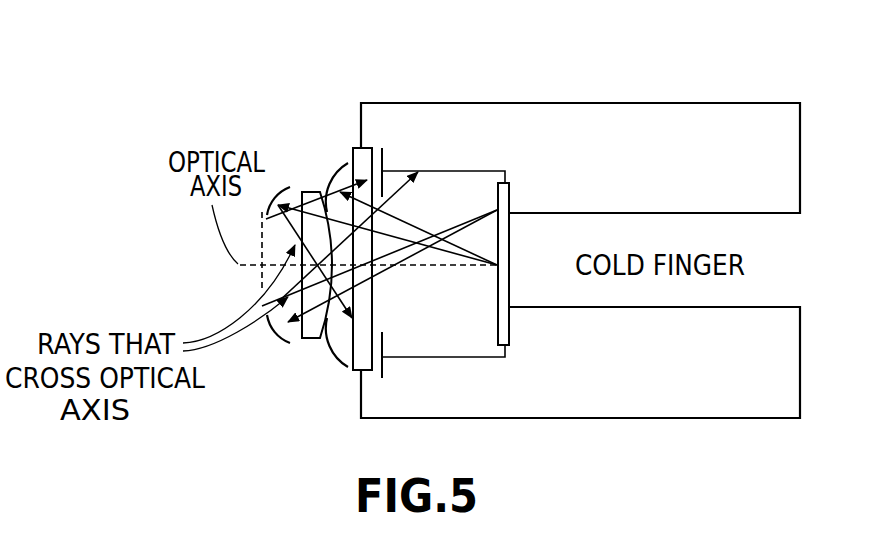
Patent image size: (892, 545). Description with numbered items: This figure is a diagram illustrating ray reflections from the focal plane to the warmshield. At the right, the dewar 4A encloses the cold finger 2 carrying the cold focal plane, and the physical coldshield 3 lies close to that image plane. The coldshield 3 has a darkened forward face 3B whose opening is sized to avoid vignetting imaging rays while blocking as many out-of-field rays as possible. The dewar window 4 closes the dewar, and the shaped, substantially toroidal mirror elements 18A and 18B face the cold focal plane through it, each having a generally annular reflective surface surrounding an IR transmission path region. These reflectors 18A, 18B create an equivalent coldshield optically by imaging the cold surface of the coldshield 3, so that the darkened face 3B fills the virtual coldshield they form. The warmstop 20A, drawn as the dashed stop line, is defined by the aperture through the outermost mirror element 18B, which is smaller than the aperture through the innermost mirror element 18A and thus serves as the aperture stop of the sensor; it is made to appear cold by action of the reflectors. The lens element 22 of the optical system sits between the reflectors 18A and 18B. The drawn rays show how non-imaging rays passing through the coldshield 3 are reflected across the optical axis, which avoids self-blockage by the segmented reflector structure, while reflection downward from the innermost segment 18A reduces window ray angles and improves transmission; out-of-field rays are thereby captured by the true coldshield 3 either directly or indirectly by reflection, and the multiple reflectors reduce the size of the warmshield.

The cold finger 2 is at (509, 297).
The coldshield 3 is at (462, 358).
The darkened forward face of the coldshield 3B is at (380, 378).
The dewar window 4 is at (352, 150).
The dewar 4A is at (640, 103).
The innermost mirror element 18A is at (333, 357).
The outermost mirror element 18B is at (280, 338).
The warmstop 20A is at (262, 288).
The lens element 22 is at (310, 192).